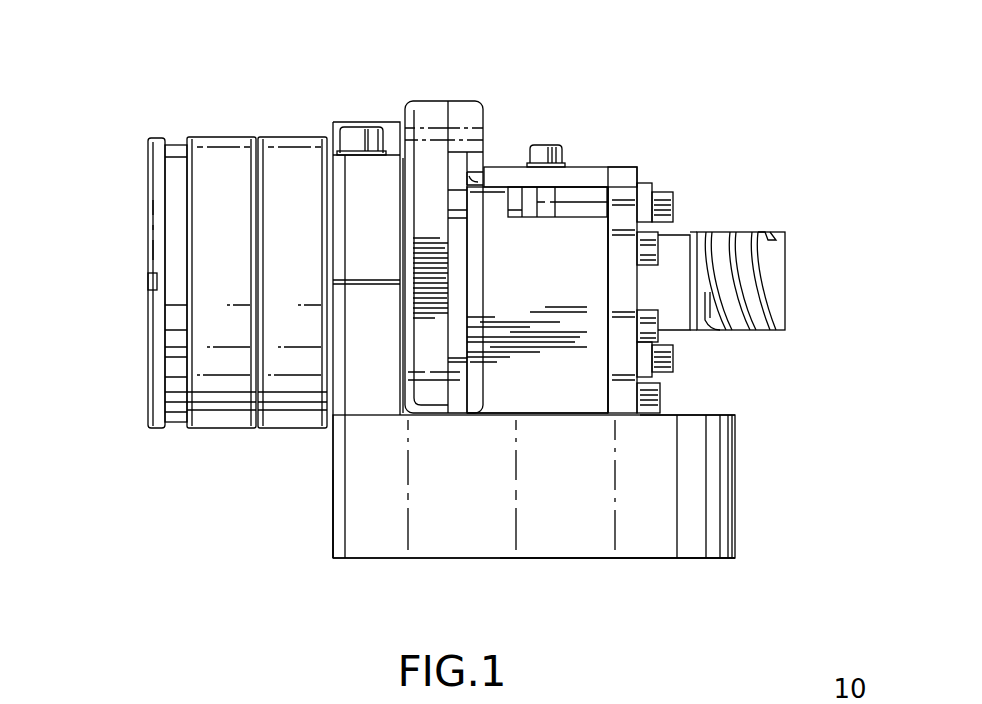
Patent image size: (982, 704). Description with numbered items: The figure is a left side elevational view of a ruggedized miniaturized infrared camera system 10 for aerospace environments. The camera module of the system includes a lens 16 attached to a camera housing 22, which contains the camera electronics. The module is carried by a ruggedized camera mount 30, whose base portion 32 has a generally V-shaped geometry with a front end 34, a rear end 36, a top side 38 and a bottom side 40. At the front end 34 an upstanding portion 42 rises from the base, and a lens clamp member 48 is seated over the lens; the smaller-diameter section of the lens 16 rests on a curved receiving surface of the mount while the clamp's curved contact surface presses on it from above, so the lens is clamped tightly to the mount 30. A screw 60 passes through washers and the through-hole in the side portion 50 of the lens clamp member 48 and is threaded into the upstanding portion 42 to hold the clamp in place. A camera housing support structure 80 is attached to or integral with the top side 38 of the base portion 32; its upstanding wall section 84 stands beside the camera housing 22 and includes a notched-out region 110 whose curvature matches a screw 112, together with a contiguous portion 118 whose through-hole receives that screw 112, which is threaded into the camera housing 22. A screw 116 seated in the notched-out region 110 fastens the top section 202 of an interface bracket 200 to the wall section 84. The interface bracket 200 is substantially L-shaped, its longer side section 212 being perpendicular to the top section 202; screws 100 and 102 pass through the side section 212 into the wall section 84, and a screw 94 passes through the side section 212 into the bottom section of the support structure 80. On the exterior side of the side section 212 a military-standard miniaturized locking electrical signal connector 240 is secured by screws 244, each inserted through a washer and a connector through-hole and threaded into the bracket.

The ruggedized miniaturized infrared camera system 10 is at (100, 109).
The lens 16 is at (222, 138).
The camera housing 22 is at (432, 100).
The ruggedized camera mount 30 is at (332, 536).
The base portion 32 is at (380, 558).
The front end 34 is at (332, 492).
The rear end 36 is at (735, 495).
The top side 38 is at (712, 415).
The bottom side 40 is at (625, 560).
The upstanding portion 42 is at (365, 330).
The lens clamp member 48 is at (377, 127).
The side portion 50 is at (363, 205).
The screw 60 is at (352, 138).
The camera housing support structure 80 is at (487, 398).
The upstanding wall section 84 is at (533, 398).
The screw 94 is at (648, 398).
The screw 100 is at (662, 246).
The screw 102 is at (660, 323).
The notched-out region 110 is at (575, 190).
The screw 112 is at (520, 197).
The screw 116 is at (540, 150).
The portion 118 is at (483, 200).
The interface bracket 200 is at (645, 167).
The top section 202 is at (600, 168).
The side section 212 is at (620, 350).
The electrical signal connector 240 is at (770, 236).
The screw 244 is at (668, 198).